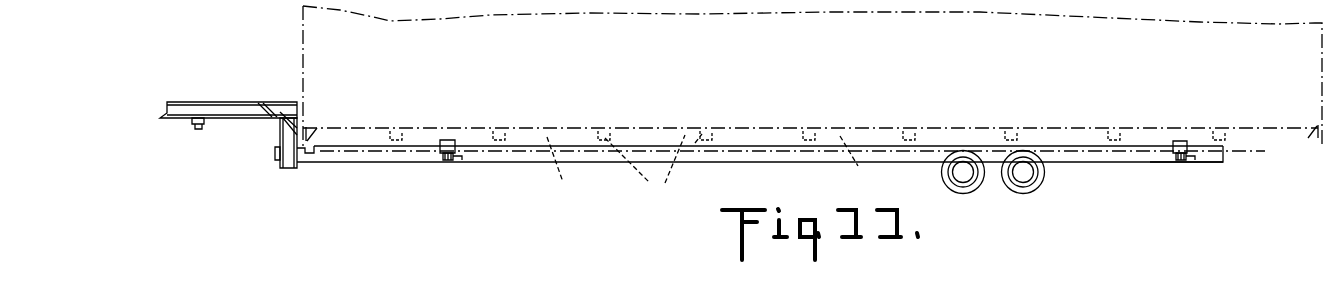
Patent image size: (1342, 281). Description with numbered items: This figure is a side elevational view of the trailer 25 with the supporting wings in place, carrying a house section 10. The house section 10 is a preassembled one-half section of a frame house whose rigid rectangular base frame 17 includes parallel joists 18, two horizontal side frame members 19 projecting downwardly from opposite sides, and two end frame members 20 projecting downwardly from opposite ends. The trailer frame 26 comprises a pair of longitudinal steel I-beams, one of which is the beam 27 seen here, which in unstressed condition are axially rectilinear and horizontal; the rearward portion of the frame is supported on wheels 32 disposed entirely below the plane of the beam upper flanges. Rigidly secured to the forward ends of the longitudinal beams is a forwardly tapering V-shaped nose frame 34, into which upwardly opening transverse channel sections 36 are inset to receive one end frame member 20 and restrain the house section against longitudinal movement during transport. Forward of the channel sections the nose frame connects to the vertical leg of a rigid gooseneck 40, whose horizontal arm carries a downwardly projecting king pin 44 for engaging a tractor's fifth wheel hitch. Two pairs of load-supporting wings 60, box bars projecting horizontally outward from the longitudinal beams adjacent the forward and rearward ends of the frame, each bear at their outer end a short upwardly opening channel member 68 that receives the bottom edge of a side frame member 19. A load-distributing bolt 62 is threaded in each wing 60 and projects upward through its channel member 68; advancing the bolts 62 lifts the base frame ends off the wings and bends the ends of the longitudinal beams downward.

The house section 10 is at (598, 76).
The base frame 17 is at (861, 163).
The joists 18 is at (653, 168).
The side frame members 19 is at (564, 170).
The end frame members 20 is at (316, 130).
The trailer 25 is at (1072, 167).
The frame 26 is at (741, 144).
The longitudinal steel I-beam 27 is at (766, 154).
The wheels 32 is at (963, 193).
The nose frame 34 is at (325, 157).
The channel sections 36 is at (310, 160).
The gooseneck 40 is at (235, 105).
The king pin 44 is at (193, 132).
The load-supporting wings 60 is at (455, 157).
The bolt 62 is at (443, 160).
The channel member 68 is at (447, 140).